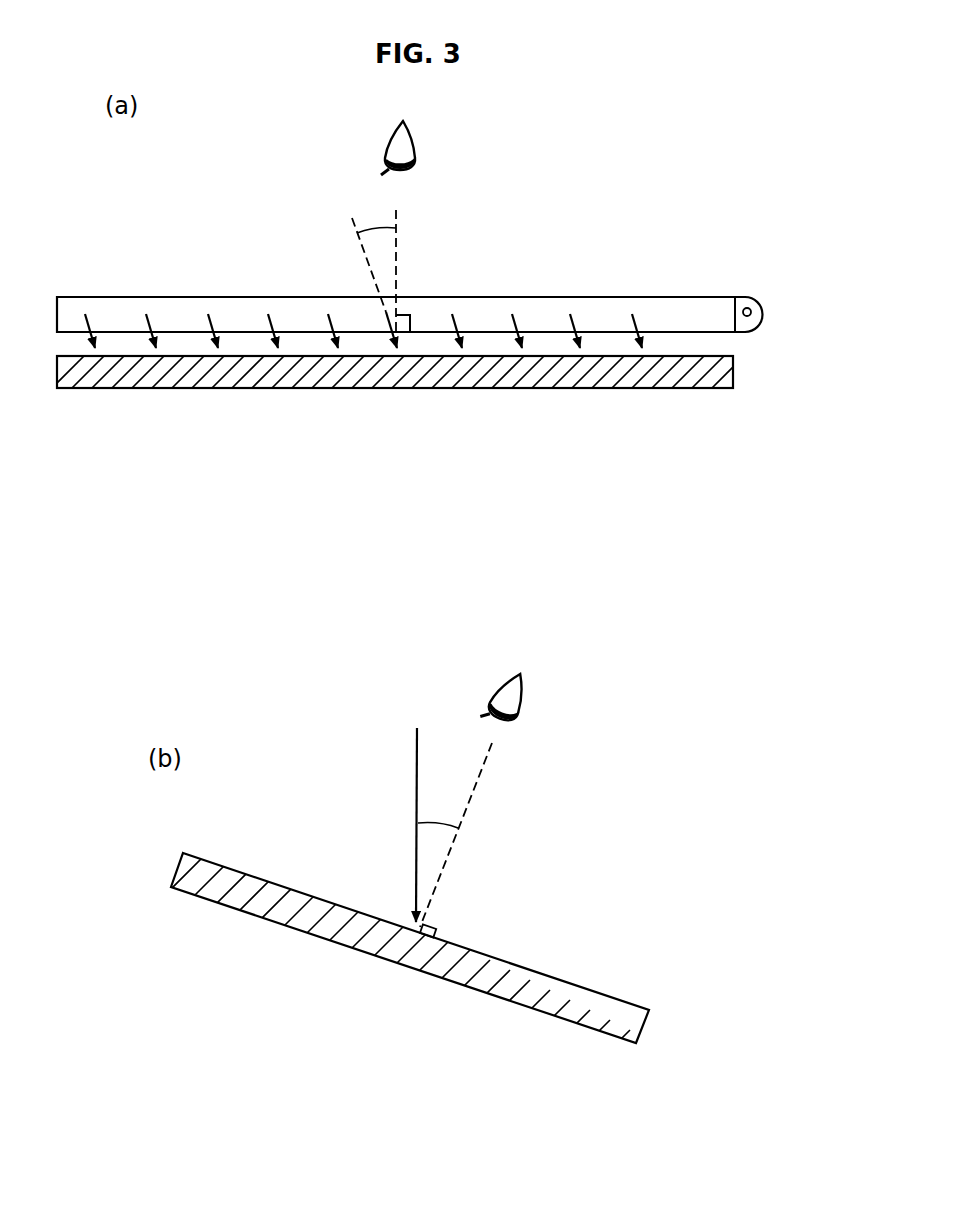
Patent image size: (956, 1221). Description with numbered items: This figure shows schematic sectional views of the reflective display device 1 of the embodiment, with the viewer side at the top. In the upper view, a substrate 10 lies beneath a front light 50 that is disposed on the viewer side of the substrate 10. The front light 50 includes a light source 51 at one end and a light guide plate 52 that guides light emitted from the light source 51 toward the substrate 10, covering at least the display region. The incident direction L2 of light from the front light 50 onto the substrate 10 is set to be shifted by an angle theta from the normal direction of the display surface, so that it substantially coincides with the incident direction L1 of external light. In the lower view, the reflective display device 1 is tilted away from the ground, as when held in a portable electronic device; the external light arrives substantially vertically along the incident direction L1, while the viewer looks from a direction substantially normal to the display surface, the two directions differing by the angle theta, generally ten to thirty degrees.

The reflective display device 1 is at (698, 245).
The substrate 10 is at (729, 378).
The front light 50 is at (446, 270).
The light source 51 is at (753, 302).
The light guide plate 52 is at (587, 312).
The incident direction of external light L1 is at (420, 820).
The incident direction of light from the front light L2 is at (224, 331).